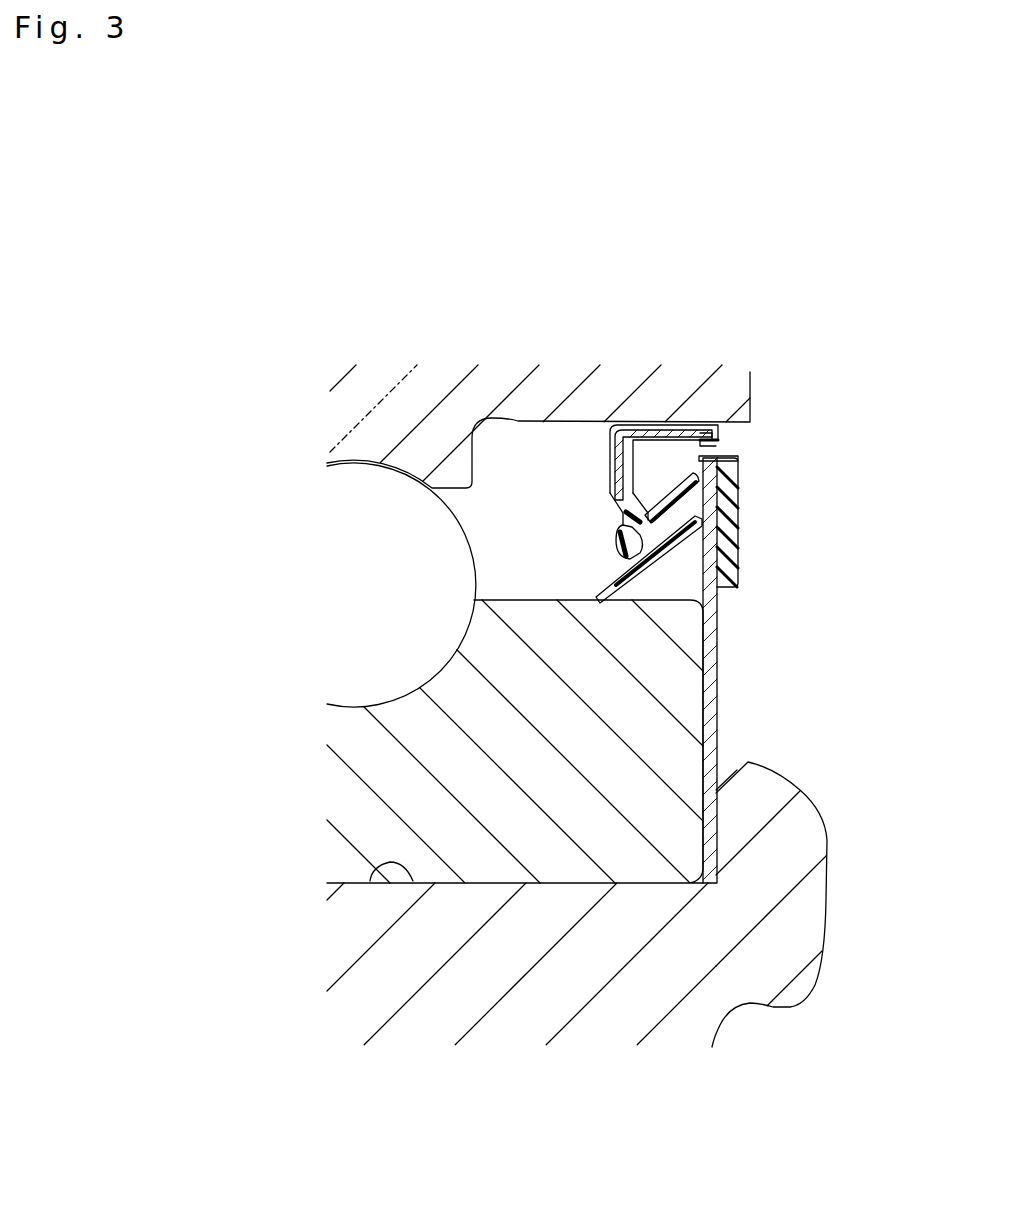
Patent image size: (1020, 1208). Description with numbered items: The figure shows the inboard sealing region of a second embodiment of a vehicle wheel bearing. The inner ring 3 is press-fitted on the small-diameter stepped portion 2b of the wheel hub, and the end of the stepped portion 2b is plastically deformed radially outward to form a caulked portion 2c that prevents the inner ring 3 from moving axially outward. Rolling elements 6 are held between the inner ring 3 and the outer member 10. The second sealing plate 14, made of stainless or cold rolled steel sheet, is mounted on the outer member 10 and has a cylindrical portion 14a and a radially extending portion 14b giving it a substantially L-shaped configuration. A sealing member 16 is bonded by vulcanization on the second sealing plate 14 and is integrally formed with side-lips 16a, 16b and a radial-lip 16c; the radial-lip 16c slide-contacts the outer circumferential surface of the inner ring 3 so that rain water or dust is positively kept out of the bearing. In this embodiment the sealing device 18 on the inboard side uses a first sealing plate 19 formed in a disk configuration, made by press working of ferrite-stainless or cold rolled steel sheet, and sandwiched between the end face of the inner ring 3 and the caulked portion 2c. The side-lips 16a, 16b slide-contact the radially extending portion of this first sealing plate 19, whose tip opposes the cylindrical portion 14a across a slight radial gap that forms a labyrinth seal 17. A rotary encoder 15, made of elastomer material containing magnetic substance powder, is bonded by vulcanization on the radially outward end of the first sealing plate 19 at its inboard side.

The stepped portion 2b is at (363, 883).
The caulked portion 2c is at (780, 840).
The inner ring 3 is at (433, 803).
The rolling elements 6 is at (335, 487).
The outer member 10 is at (462, 390).
The second sealing plate 14 is at (680, 258).
The cylindrical portion 14a is at (650, 425).
The radially extending portion 14b is at (607, 452).
The rotary encoder 15 is at (738, 473).
The sealing member 16 is at (493, 540).
The side-lip 16a is at (612, 493).
The side-lip 16b is at (617, 523).
The radial-lip 16c is at (603, 560).
The labyrinth seal 17 is at (715, 447).
The sealing device 18 is at (739, 448).
The first sealing plate 19 is at (717, 652).